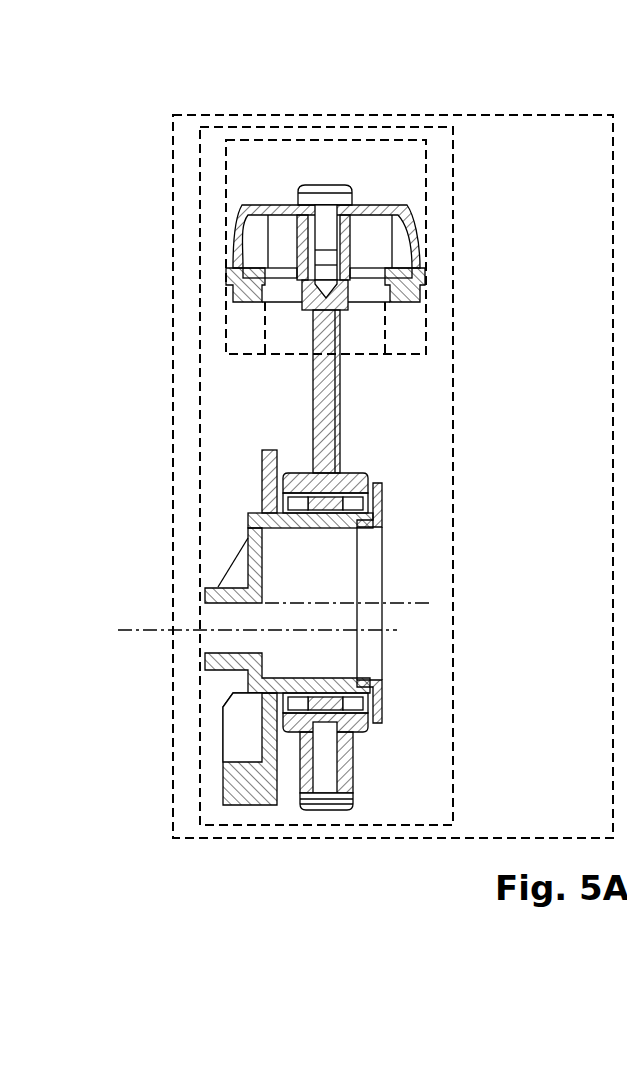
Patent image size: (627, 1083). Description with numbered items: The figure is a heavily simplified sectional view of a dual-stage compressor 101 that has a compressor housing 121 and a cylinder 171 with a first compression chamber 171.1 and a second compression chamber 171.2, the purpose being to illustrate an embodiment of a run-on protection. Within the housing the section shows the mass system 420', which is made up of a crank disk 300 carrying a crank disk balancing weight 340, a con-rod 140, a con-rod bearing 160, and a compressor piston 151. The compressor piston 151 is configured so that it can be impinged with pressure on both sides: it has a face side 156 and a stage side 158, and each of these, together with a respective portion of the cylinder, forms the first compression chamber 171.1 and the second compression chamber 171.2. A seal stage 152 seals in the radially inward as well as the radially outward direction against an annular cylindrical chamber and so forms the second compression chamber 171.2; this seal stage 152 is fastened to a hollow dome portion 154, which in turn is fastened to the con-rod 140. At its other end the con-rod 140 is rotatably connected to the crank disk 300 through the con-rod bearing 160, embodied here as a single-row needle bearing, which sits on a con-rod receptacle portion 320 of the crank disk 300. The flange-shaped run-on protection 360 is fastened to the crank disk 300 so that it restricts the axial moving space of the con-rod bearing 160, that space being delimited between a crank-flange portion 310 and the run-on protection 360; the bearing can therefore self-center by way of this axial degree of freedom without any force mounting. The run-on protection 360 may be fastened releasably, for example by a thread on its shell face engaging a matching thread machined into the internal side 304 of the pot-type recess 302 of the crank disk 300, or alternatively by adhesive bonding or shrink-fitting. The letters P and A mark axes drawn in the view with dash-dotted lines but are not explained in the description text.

The dual-stage compressor 101 is at (535, 115).
The compressor housing 121 is at (290, 127).
The cylinder 171 is at (345, 140).
The first compression chamber 171.1 is at (407, 177).
The second compression chamber 171.2 is at (238, 328).
The mass system 420' is at (507, 184).
The face side 156 is at (272, 203).
The dome portion 154 is at (237, 235).
The compressor piston 151 is at (233, 212).
The seal stage 152 is at (233, 288).
The stage side 158 is at (412, 305).
The con-rod 140 is at (318, 420).
The con-rod receptacle portion 320 is at (332, 507).
The crank-flange portion 310 is at (267, 472).
The run-on protection 360 is at (383, 487).
The crank disk 300 is at (257, 558).
The pot-type recess 302 is at (328, 647).
The internal side 304 is at (330, 680).
The crank disk balancing weight 340 is at (237, 785).
The con-rod bearing 160 is at (327, 703).
The piston axis P is at (417, 603).
The flow axis A is at (132, 630).